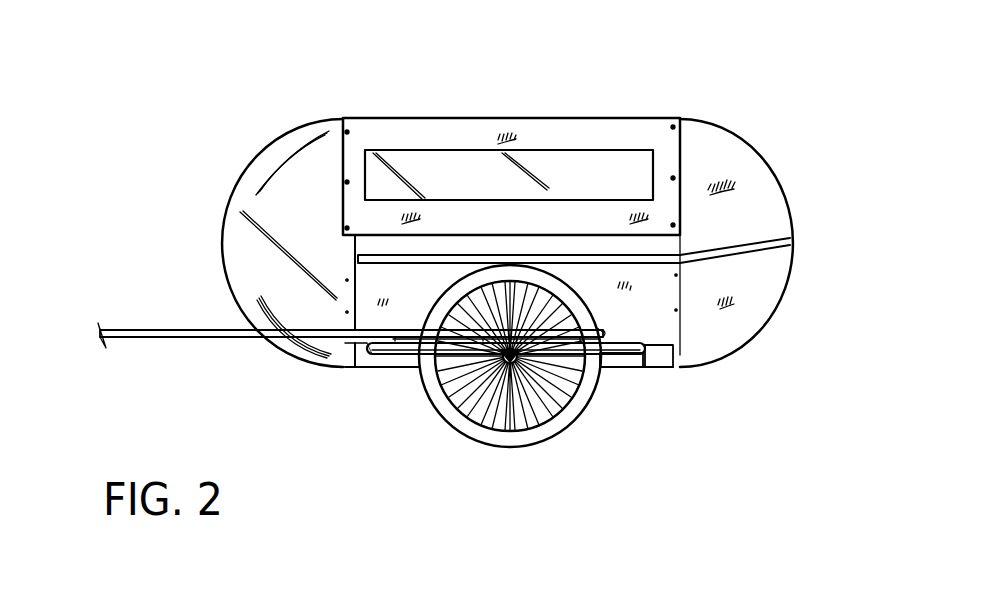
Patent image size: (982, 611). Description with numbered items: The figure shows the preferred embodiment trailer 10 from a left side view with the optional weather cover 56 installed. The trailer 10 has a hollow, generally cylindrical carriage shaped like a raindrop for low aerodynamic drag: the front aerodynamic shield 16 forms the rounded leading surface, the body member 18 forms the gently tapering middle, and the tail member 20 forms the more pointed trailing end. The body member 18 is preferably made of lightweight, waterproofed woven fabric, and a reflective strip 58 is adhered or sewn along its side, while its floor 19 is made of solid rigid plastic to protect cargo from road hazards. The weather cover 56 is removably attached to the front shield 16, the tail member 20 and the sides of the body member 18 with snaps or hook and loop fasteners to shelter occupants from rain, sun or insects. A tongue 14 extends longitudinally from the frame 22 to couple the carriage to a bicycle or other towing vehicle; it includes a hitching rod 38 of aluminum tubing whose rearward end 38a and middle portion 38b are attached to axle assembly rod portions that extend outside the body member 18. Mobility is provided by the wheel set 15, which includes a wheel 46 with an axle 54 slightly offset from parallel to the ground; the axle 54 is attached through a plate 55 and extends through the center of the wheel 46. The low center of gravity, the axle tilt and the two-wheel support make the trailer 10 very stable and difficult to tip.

The trailer 10 is at (223, 85).
The tongue 14 is at (218, 342).
The wheel set 15 is at (519, 389).
The front aerodynamic shield 16 is at (242, 200).
The body member 18 is at (665, 333).
The floor 19 is at (395, 365).
The tail member 20 is at (760, 182).
The frame 22 is at (638, 360).
The hitching rod 38 is at (277, 333).
The rearward end 38a is at (600, 325).
The middle portion 38b is at (355, 367).
The wheel 46 is at (518, 444).
The axle 54 is at (513, 357).
The plate 55 is at (530, 363).
The weather cover 56 is at (458, 127).
The reflective strip 58 is at (778, 250).